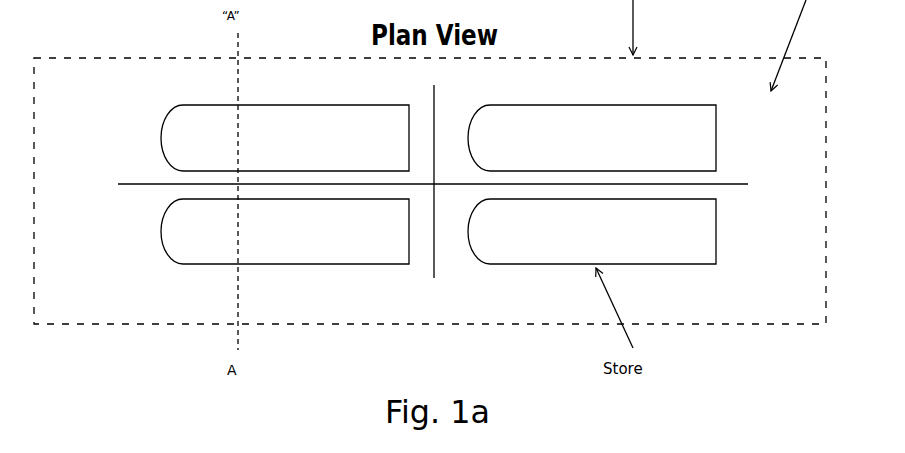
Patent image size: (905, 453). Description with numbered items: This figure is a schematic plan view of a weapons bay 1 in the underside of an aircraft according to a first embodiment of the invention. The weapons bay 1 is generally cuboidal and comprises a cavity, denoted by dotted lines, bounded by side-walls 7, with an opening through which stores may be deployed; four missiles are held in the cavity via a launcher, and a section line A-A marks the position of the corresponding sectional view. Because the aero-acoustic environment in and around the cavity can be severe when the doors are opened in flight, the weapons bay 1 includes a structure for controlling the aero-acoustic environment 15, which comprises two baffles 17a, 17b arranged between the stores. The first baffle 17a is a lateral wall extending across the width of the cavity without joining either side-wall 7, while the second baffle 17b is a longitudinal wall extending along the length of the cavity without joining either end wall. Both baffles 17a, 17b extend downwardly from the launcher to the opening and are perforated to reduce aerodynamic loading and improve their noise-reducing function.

The weapons bay 1 is at (438, 184).
The side-walls 7 is at (491, 328).
The structure for controlling the aero-acoustic environment 15 is at (126, 181).
The first baffle 17a is at (438, 270).
The second baffle 17b is at (733, 189).